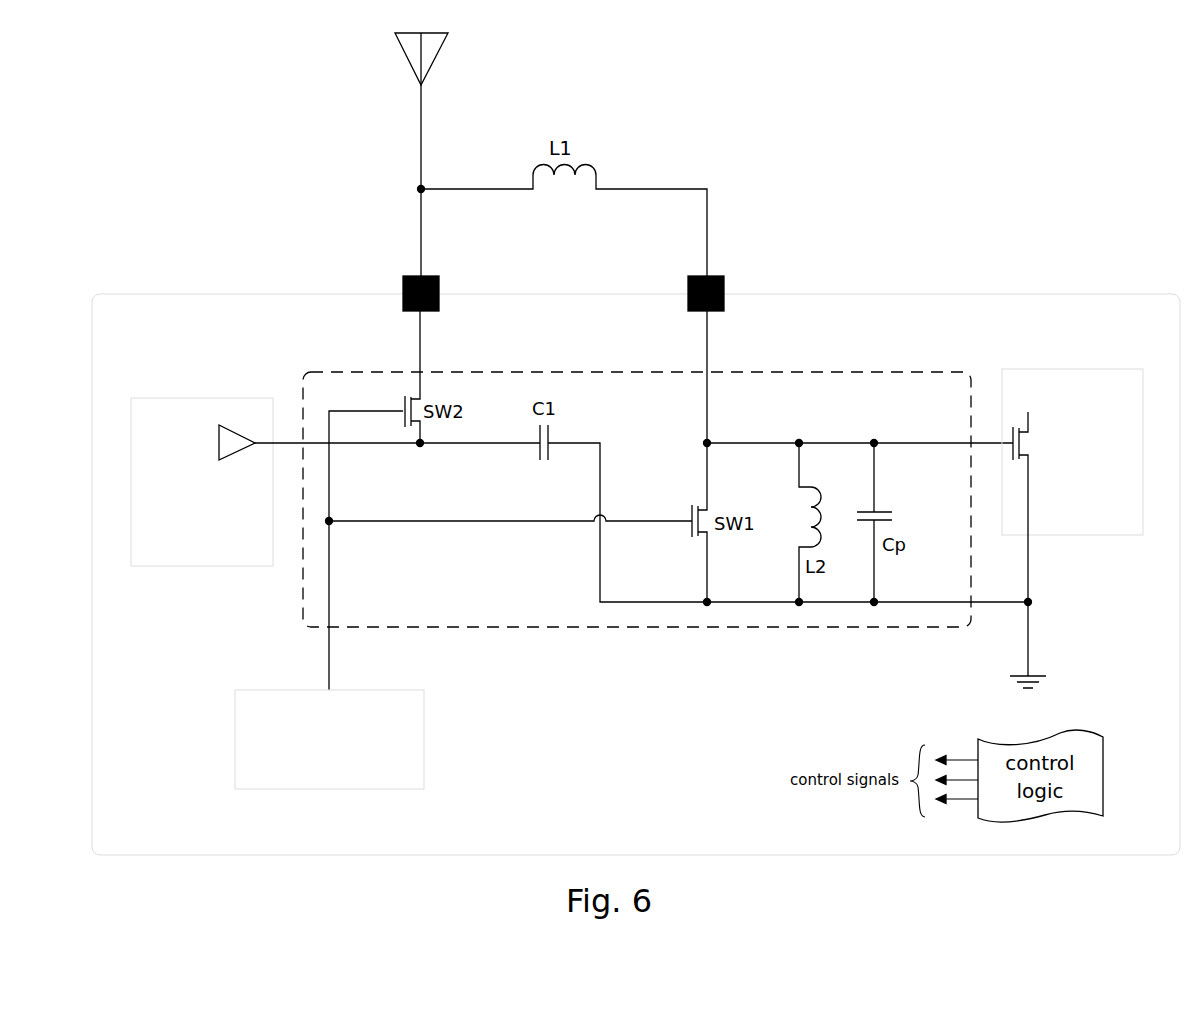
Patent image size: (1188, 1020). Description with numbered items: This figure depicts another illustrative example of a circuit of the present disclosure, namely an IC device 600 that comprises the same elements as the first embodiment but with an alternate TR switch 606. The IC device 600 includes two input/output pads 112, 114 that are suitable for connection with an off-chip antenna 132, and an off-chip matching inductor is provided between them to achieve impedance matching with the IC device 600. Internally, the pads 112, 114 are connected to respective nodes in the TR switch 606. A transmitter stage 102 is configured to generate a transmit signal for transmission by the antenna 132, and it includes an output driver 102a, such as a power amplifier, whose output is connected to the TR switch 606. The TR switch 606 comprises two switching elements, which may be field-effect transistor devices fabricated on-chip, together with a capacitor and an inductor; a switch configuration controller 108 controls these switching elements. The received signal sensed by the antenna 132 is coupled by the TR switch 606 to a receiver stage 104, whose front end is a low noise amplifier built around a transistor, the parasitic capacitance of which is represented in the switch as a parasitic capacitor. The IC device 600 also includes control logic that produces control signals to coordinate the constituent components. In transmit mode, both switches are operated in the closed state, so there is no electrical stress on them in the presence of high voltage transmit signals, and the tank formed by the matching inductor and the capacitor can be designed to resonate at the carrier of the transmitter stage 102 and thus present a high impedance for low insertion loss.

The IC device 600 is at (971, 294).
The antenna 132 is at (438, 64).
The pad 112 is at (410, 276).
The pad 114 is at (698, 276).
The transmitter stage 102 is at (200, 566).
The output driver 102a is at (236, 457).
The TR switch 606 is at (598, 628).
The receiver stage 104 is at (1068, 536).
The switch configuration controller 108 is at (424, 767).